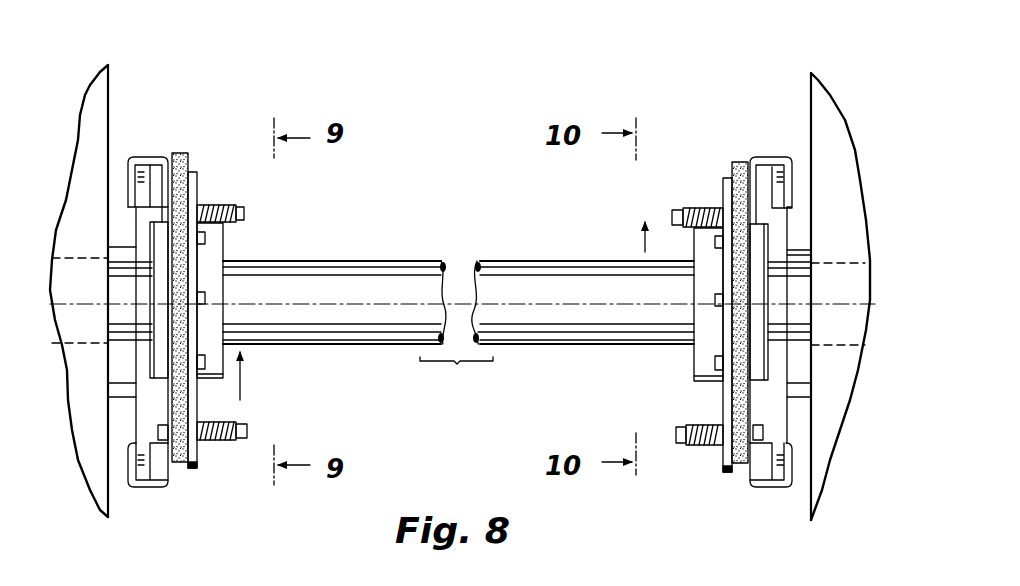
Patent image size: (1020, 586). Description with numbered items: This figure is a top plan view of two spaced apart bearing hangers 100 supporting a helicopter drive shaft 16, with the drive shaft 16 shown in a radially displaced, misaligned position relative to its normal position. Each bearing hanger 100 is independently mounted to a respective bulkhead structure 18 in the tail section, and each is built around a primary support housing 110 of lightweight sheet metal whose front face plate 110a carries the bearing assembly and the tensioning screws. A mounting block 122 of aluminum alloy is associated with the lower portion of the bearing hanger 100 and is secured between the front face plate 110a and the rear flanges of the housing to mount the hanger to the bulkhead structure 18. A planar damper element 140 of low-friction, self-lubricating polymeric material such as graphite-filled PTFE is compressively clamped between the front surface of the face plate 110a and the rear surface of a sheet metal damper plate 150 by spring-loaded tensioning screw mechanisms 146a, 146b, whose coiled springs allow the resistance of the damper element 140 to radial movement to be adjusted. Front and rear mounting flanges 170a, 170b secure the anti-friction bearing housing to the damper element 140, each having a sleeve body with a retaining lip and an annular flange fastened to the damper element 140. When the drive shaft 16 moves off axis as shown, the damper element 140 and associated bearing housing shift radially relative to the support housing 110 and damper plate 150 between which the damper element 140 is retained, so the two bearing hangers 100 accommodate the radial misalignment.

The bulkhead structure 18 is at (91, 97).
The drive shaft 16 is at (413, 280).
The bearing hanger 100 is at (460, 248).
The primary support housing 110 is at (763, 157).
The front face plate 110a is at (178, 478).
The mounting block 122 is at (152, 205).
The damper element 140 is at (185, 150).
The tensioning screw mechanism 146a is at (227, 443).
The tensioning screw mechanism 146b is at (240, 203).
The damper plate 150 is at (191, 478).
The front mounting flange 170a is at (216, 378).
The rear mounting flange 170b is at (164, 358).